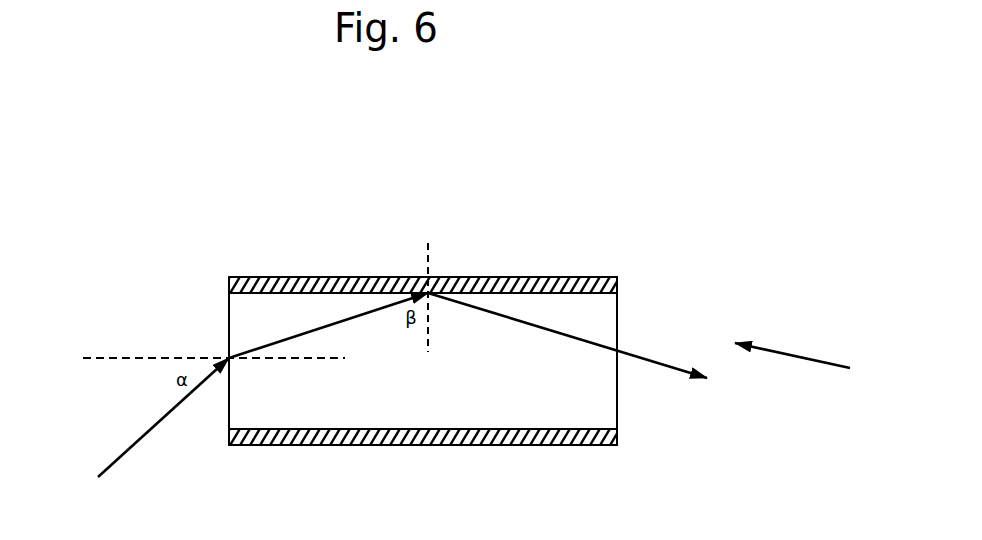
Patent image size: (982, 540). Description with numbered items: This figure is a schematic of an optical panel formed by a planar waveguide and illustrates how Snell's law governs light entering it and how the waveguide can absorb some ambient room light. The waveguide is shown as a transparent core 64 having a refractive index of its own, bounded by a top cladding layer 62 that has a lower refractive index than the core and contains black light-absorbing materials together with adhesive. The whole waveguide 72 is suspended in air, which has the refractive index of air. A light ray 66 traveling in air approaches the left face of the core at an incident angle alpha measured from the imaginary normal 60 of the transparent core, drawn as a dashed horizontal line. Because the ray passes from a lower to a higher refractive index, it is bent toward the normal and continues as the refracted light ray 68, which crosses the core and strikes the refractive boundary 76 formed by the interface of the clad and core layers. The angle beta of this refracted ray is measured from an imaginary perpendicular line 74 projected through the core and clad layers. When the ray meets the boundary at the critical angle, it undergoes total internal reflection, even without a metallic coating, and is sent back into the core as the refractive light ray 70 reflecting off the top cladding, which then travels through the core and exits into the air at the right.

The imaginary normal of the transparent core 60 is at (127, 358).
The top cladding layer 62 is at (600, 288).
The transparent core of a waveguide 64 is at (593, 316).
The light ray traveling in air 66 is at (160, 422).
The refracted light ray 68 is at (300, 334).
The refractive light ray reflecting off the top cladding 70 is at (667, 366).
The waveguide suspended in air 72 is at (817, 358).
The imaginary perpendicular line 74 is at (433, 260).
The refractive boundary 76 is at (620, 280).